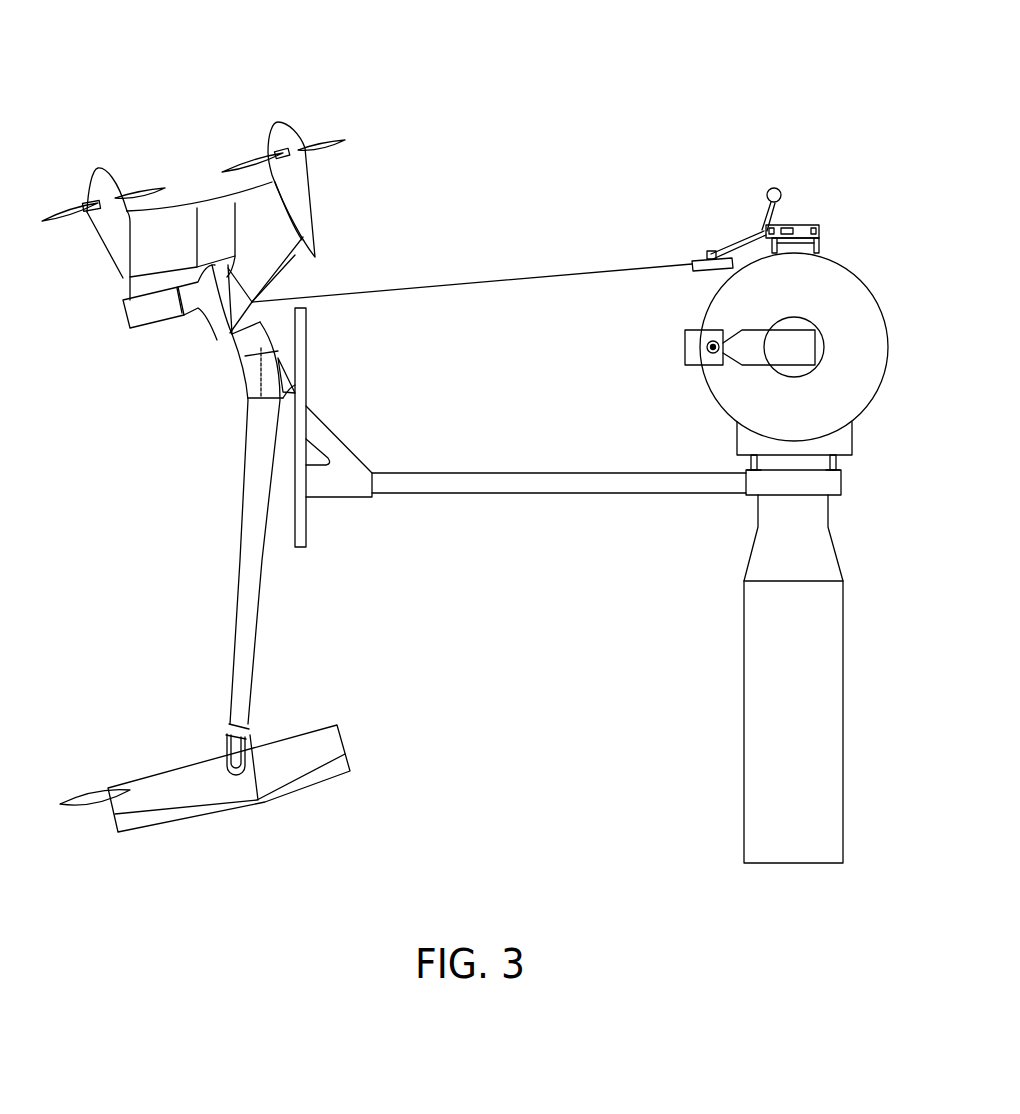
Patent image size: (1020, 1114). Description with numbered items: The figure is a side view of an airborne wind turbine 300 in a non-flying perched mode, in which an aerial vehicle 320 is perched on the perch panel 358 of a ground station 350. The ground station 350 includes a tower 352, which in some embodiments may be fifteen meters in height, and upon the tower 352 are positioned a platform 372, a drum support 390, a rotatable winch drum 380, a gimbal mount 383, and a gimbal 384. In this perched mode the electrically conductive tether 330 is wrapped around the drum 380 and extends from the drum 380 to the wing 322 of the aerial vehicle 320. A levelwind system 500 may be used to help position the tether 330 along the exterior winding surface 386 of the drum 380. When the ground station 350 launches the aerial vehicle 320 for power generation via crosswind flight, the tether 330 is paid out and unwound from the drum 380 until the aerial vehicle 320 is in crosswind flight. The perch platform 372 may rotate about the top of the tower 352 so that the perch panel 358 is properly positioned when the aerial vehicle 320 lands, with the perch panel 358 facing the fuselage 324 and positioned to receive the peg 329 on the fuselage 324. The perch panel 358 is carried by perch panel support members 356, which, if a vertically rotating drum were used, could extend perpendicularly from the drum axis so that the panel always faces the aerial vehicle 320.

The airborne wind turbine 300 is at (596, 64).
The aerial vehicle 320 is at (201, 88).
The wing 322 is at (212, 310).
The fuselage 324 is at (252, 557).
The peg 329 is at (283, 397).
The electrically conductive tether 330 is at (622, 261).
The ground station 350 is at (858, 253).
The tower 352 is at (845, 646).
The perch panel support members 356 is at (545, 488).
The perch panel 358 is at (308, 337).
The platform 372 is at (843, 488).
The rotatable winch drum 380 is at (860, 309).
The gimbal mount 383 is at (752, 330).
The gimbal 384 is at (700, 372).
The exterior winding surface 386 is at (862, 286).
The drum support 390 is at (852, 437).
The levelwind system 500 is at (784, 160).